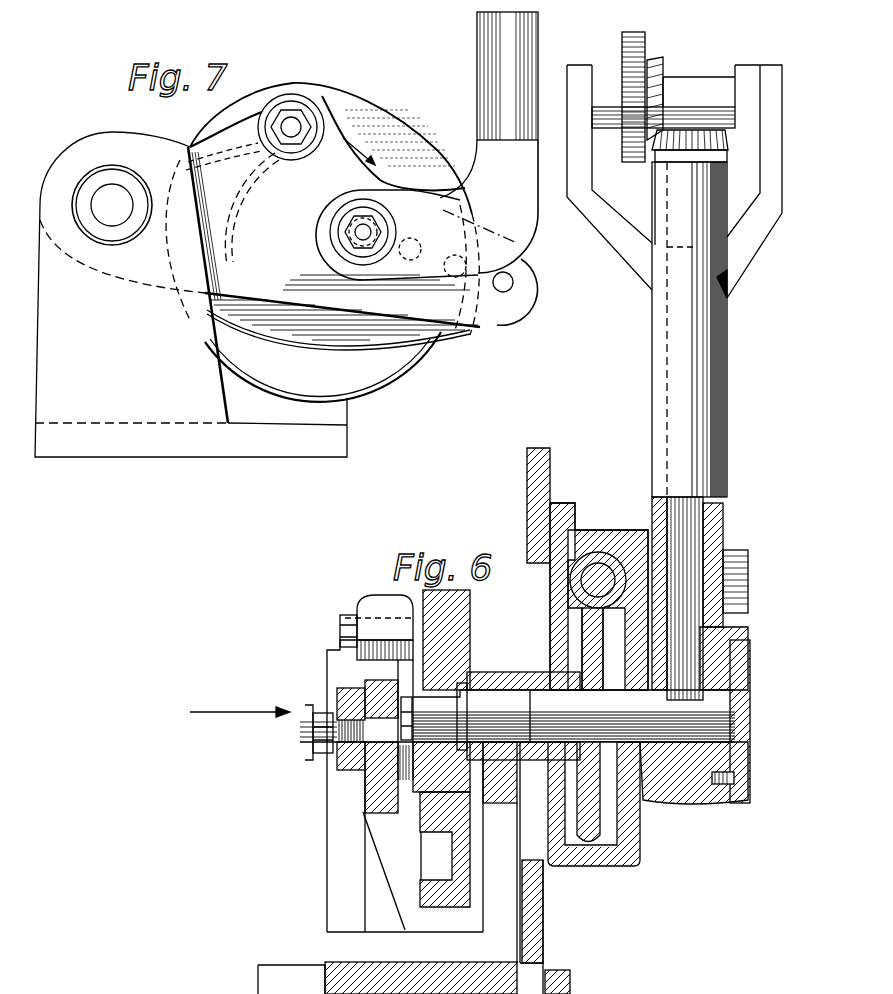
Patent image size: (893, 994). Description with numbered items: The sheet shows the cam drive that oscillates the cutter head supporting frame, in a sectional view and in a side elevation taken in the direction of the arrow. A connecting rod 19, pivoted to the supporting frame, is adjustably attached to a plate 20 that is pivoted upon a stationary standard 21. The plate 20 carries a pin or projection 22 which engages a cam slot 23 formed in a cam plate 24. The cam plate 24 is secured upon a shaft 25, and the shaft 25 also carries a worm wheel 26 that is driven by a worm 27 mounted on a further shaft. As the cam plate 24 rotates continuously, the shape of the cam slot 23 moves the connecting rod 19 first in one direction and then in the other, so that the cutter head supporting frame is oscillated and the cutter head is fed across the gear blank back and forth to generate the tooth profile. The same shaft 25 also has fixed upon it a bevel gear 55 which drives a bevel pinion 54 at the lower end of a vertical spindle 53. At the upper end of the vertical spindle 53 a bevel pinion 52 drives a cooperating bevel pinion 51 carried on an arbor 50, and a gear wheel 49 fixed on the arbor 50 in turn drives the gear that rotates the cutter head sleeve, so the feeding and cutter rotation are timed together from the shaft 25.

In FIG. 7, the connecting rod 19 is at (520, 50).
In FIG. 6, the connecting rod 19 is at (345, 770).
In FIG. 7, the plate 20 is at (292, 283).
In FIG. 6, the plate 20 is at (385, 813).
In FIG. 7, the stationary standard 21 is at (128, 180).
In FIG. 6, the stationary standard 21 is at (343, 800).
In FIG. 7, the pin or projection 22 is at (292, 127).
In FIG. 6, the pin or projection 22 is at (435, 612).
In FIG. 7, the cam slot 23 is at (385, 150).
In FIG. 6, the cam slot 23 is at (428, 880).
In FIG. 7, the cam plate 24 is at (392, 384).
In FIG. 6, the cam plate 24 is at (458, 625).
In FIG. 6, the shaft 25 is at (515, 705).
In FIG. 6, the worm wheel 26 is at (597, 637).
In FIG. 6, the worm 27 is at (606, 568).
In FIG. 6, the gear wheel 49 is at (632, 40).
In FIG. 6, the arbor 50 is at (663, 107).
In FIG. 6, the bevel pinion 51 is at (663, 72).
In FIG. 6, the bevel pinion 52 is at (728, 145).
In FIG. 6, the vertical spindle 53 is at (690, 535).
In FIG. 6, the bevel pinion 54 is at (744, 688).
In FIG. 6, the bevel gear 55 is at (660, 792).